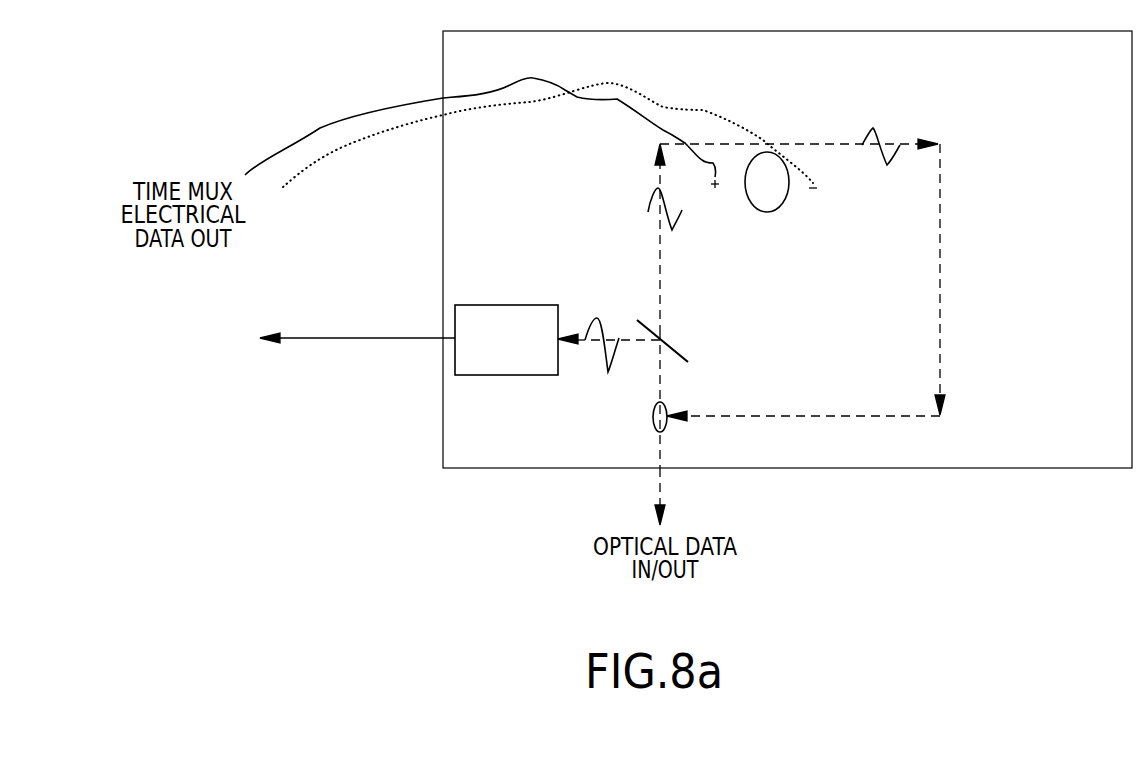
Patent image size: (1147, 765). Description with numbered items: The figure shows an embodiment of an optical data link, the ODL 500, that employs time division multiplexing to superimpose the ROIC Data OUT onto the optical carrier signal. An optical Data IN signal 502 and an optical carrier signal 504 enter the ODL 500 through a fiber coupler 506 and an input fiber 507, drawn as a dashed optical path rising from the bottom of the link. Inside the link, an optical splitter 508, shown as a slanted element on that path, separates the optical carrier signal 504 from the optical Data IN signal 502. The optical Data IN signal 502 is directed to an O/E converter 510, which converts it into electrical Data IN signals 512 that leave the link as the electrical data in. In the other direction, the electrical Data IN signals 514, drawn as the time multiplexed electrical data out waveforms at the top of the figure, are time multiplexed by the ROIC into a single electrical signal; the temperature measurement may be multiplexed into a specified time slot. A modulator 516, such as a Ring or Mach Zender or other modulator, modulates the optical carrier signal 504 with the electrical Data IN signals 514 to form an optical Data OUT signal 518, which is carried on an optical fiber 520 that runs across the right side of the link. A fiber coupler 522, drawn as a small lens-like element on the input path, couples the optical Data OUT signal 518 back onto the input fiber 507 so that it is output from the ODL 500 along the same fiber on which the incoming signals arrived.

The ODL 500 is at (1113, 65).
The optical Data IN signal 502 is at (609, 364).
The optical carrier signal 504 is at (656, 193).
The fiber coupler 506 is at (643, 478).
The input fiber 507 is at (660, 447).
The optical splitter 508 is at (673, 342).
The O/E converter 510 is at (492, 305).
The electrical Data IN signals 512 is at (248, 352).
The electrical Data IN signals 514 is at (320, 128).
The modulator 516 is at (767, 212).
The optical Data OUT signal 518 is at (873, 128).
The optical fiber 520 is at (940, 312).
The fiber coupler 522 is at (664, 403).